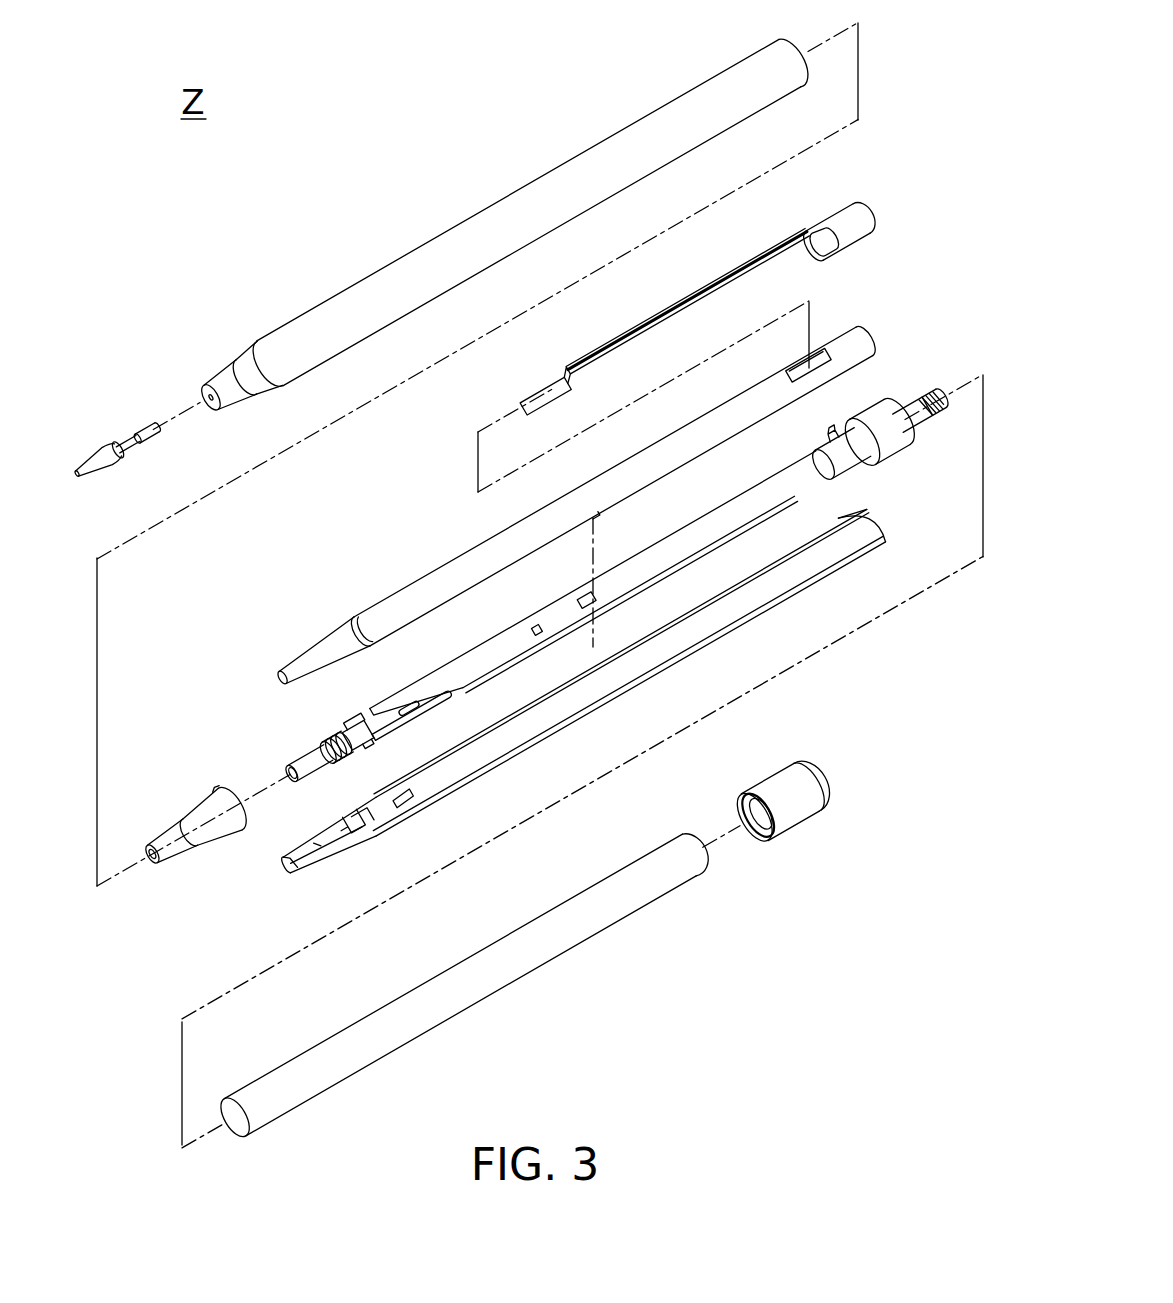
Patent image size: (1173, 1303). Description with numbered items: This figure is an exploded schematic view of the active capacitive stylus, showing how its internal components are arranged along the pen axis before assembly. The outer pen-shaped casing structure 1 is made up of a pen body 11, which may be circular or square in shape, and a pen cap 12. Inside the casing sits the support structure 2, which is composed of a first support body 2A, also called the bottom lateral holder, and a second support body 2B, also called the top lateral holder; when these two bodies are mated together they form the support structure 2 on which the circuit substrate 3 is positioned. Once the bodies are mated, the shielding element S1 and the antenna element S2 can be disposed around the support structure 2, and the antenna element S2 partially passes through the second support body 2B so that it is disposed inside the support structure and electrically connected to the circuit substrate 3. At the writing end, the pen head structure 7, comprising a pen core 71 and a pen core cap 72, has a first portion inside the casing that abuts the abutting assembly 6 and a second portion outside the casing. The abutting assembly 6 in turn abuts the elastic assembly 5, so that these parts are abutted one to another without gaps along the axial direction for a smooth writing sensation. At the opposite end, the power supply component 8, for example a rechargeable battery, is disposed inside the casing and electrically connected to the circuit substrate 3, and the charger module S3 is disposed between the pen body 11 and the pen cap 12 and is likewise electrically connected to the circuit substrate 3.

The pen-shaped casing structure 1 is at (504, 228).
The pen body 11 is at (615, 152).
The pen cap 12 is at (790, 805).
The support structure 2 is at (579, 603).
The first support body 2A is at (463, 762).
The second support body 2B is at (393, 604).
The circuit substrate 3 is at (507, 628).
The elastic assembly 5 is at (350, 722).
The abutting assembly 6 is at (311, 774).
The pen head structure 7 is at (114, 389).
The pen core 71 is at (96, 415).
The pen core cap 72 is at (148, 428).
The power supply component 8 is at (817, 492).
The shielding element S1 is at (519, 982).
The antenna element S2 is at (872, 203).
The charger module S3 is at (905, 400).